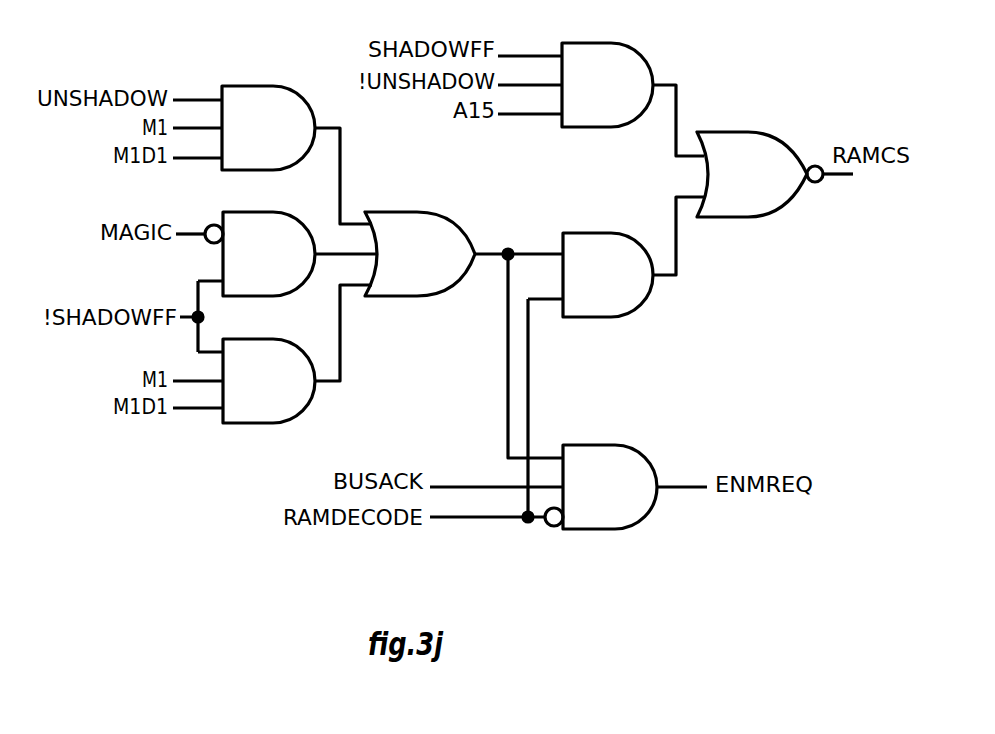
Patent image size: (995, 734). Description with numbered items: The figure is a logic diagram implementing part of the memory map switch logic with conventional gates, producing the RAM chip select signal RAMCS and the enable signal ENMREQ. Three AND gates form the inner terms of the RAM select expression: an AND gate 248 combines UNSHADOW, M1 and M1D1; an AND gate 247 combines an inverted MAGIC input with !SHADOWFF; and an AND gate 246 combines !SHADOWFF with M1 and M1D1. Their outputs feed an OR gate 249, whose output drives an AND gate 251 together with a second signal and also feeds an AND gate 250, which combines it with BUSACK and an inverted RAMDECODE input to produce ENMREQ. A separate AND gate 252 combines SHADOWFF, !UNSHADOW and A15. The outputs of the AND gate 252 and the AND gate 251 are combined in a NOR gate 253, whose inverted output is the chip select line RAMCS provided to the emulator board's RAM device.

The AND gate 246 is at (268, 368).
The AND gate with inverted input 247 is at (268, 243).
The AND gate 248 is at (268, 115).
The OR gate 249 is at (421, 241).
The AND gate with inverted input 250 is at (611, 473).
The AND gate 251 is at (608, 260).
The AND gate 252 is at (606, 71).
The NOR gate 253 is at (751, 158).